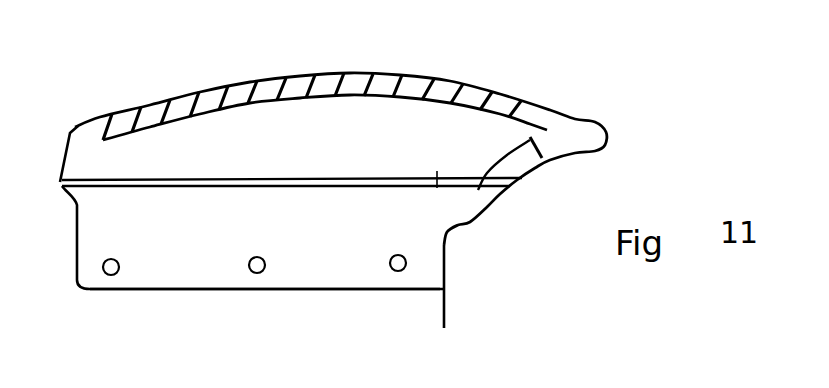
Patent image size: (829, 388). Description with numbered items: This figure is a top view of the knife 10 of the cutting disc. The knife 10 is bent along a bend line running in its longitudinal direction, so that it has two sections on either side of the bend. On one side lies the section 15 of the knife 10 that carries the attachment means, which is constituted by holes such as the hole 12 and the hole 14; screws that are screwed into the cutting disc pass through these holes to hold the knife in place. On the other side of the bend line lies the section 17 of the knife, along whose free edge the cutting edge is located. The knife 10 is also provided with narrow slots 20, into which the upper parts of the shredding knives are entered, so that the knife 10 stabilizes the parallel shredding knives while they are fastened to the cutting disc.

The knife 10 is at (338, 273).
The hole 12 is at (430, 74).
The hole 14 is at (115, 276).
The section 15 is at (187, 280).
The section 17 is at (90, 145).
The narrow slots 20 is at (230, 80).